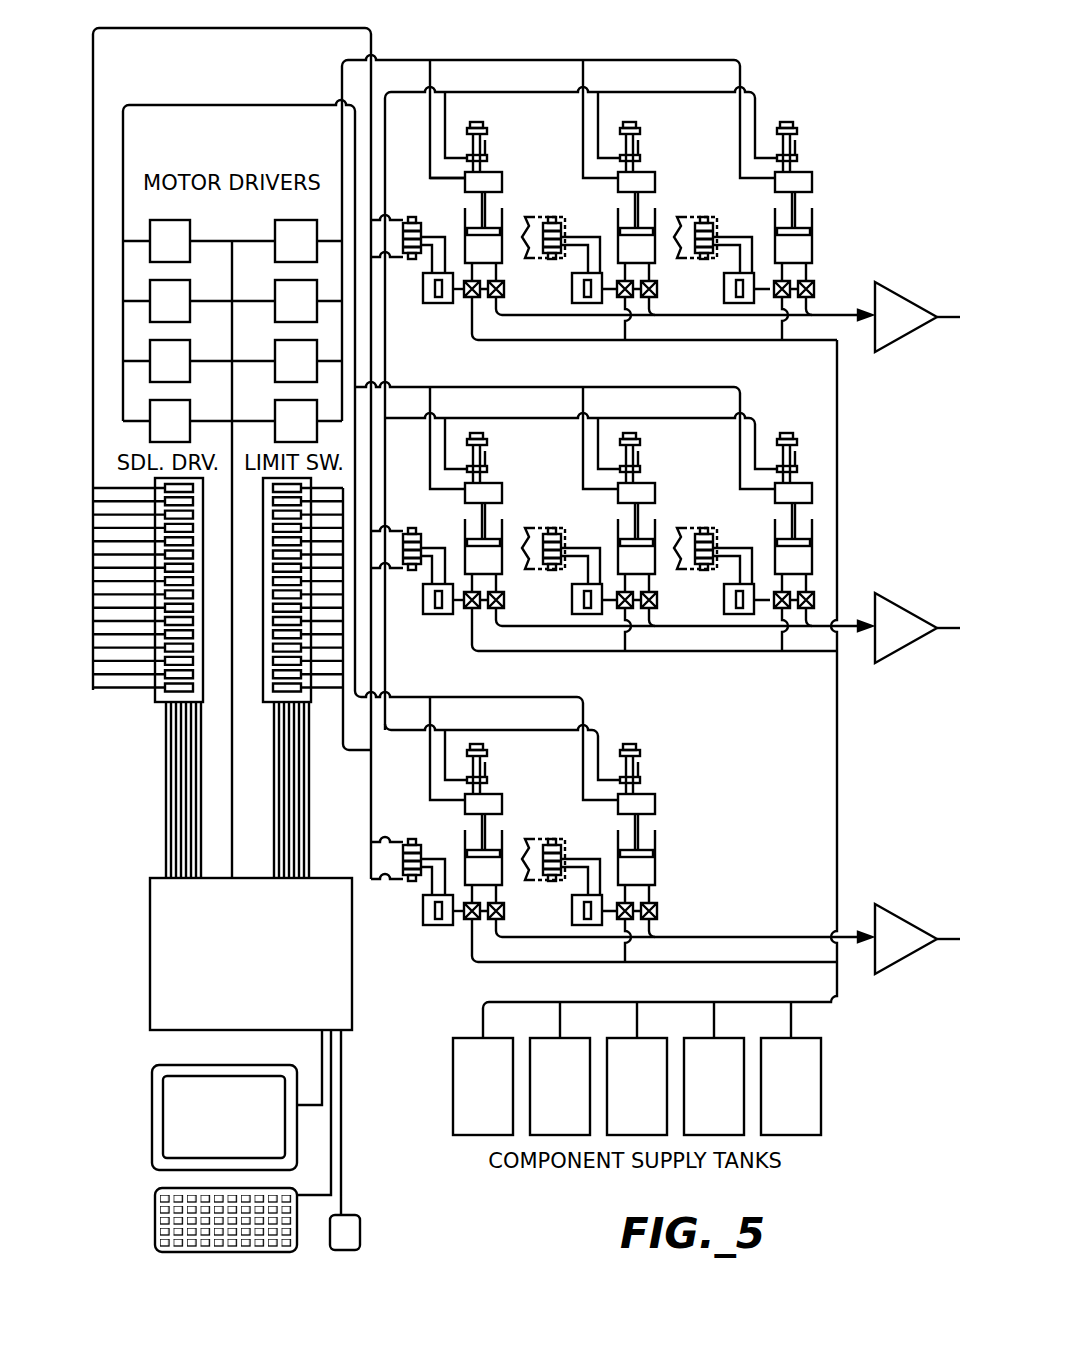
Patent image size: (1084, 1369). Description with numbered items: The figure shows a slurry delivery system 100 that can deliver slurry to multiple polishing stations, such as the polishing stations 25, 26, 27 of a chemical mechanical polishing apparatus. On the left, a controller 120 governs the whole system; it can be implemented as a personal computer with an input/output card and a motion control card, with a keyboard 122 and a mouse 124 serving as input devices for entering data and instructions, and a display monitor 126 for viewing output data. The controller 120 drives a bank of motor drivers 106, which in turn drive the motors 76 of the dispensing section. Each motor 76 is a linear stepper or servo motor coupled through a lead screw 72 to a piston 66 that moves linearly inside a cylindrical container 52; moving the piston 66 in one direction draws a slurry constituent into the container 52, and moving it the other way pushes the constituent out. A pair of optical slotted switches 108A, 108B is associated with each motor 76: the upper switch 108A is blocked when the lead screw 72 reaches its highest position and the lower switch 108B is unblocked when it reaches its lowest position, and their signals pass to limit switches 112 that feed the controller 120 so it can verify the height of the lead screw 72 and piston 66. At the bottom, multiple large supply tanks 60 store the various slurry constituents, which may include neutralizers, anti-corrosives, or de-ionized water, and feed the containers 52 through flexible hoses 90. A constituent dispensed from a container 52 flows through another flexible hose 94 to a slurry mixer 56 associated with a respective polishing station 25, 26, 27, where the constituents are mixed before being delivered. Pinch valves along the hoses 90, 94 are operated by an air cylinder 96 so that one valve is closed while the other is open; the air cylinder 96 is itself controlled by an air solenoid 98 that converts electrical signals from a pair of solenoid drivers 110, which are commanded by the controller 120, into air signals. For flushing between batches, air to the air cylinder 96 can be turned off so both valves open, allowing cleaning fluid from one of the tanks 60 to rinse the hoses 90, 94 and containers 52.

The slurry delivery system 100 is at (840, 36).
The motor drivers 106 is at (292, 238).
The upper optical slotted switch 108A is at (483, 127).
The lead screw 72 is at (487, 136).
The lower optical slotted switch 108B is at (492, 158).
The motor 76 is at (500, 172).
The container 52 is at (503, 217).
The piston 66 is at (528, 218).
The air solenoid 98 is at (417, 215).
The air cylinder 96 is at (423, 292).
The flexible hose 90 is at (505, 348).
The flexible hose 94 is at (592, 322).
The polishing station 25 is at (926, 268).
The polishing station 26 is at (926, 579).
The polishing station 27 is at (926, 890).
The slurry mixer 56 is at (906, 970).
The solenoid drivers 110 is at (172, 690).
The limit switches 112 is at (288, 690).
The controller 120 is at (251, 954).
The keyboard 122 is at (155, 1216).
The mouse 124 is at (362, 1222).
The display monitor 126 is at (224, 1117).
The supply tank 60 is at (483, 1086).